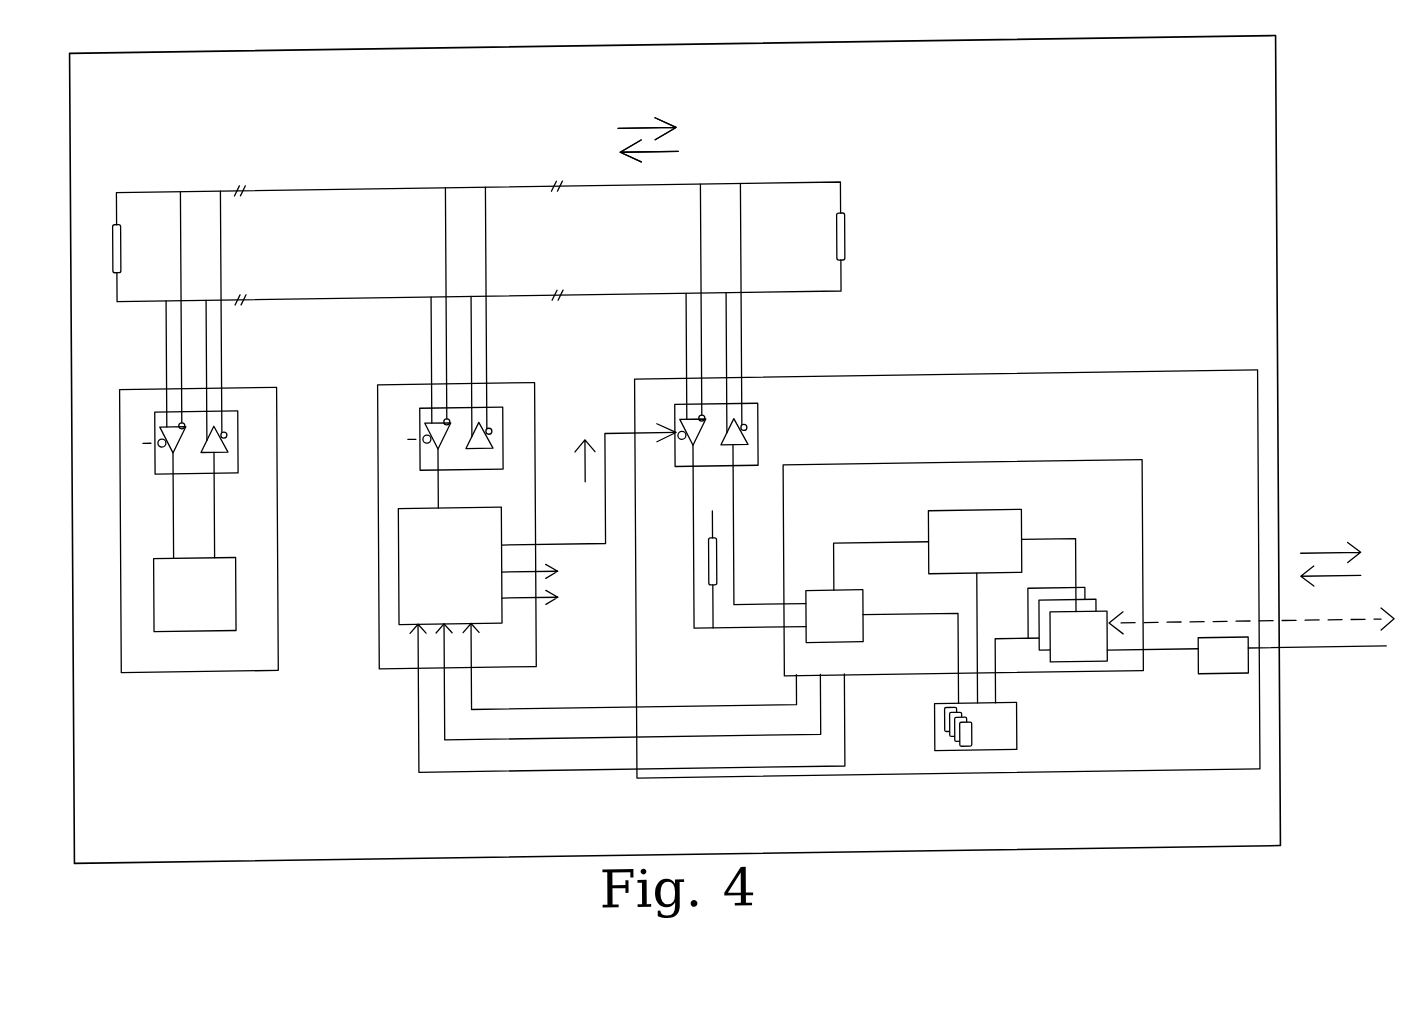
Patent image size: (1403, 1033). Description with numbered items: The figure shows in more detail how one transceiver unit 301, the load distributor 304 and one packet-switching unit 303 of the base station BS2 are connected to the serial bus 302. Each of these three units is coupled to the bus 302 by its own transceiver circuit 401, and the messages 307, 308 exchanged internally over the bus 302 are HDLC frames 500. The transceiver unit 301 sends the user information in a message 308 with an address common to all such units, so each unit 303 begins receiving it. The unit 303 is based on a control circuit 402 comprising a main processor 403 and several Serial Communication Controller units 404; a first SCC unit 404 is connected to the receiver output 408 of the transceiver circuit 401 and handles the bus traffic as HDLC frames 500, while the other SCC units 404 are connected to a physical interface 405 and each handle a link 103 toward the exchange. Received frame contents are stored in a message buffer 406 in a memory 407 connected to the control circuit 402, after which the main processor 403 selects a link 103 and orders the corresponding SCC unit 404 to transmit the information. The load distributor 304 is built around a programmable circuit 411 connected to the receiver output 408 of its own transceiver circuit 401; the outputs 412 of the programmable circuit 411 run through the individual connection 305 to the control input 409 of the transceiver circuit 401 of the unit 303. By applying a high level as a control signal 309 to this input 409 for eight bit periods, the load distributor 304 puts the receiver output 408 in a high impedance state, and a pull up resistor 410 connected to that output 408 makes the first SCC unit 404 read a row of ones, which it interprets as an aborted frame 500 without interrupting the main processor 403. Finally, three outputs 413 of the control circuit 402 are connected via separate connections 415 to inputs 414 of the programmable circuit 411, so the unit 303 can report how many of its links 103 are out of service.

The base station BS2 is at (1284, 104).
The serial bus 302 is at (328, 182).
The HDLC frame 500 is at (643, 122).
The message 308 is at (680, 120).
The message 307 is at (685, 153).
The transceiver unit 301 is at (153, 682).
The load distributor 304 is at (400, 687).
The X.25 unit 303 is at (748, 798).
The transceiver circuit 401 is at (239, 413).
The control circuit 402 is at (207, 625).
The receiver output 408 is at (437, 467).
The control input 409 is at (672, 429).
The programmable circuit 411 is at (398, 545).
The individual connection 305 is at (582, 546).
The control signal 309 is at (590, 430).
The output 412 is at (507, 601).
The input 414 is at (415, 622).
The separate connection 415 is at (567, 768).
The output 413 is at (790, 681).
The pull up resistor 410 is at (703, 561).
The Serial Communication Controller unit 404 is at (865, 630).
The main processor 403 is at (1022, 519).
The memory 407 is at (1017, 731).
The message buffer 406 is at (940, 716).
The X.25 link 103 is at (1162, 630).
The physical interface 405 is at (1217, 684).